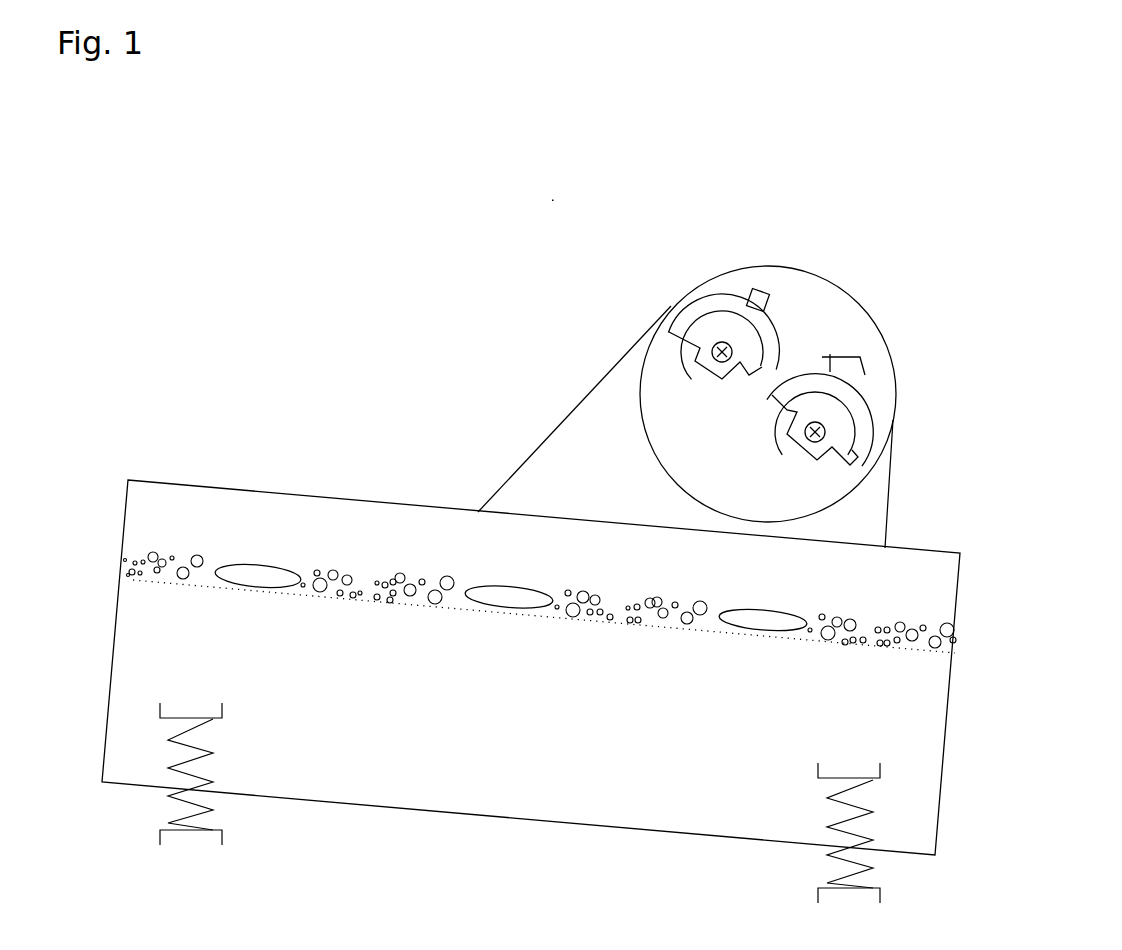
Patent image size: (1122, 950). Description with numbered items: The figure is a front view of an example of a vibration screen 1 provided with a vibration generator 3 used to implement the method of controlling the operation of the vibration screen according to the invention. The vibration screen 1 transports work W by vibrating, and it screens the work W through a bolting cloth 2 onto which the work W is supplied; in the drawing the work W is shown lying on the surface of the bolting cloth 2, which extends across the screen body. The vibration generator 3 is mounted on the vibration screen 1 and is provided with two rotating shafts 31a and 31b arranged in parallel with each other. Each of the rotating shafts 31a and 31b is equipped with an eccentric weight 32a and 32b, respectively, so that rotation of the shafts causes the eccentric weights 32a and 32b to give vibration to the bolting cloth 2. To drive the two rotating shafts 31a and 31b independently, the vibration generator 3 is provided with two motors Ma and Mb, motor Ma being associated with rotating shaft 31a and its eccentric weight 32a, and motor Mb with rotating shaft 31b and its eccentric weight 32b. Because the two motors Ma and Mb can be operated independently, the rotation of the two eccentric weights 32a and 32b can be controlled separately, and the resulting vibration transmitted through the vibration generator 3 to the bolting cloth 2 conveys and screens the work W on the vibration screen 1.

The vibration screen 1 is at (960, 580).
The bolting cloth 2 is at (712, 632).
The vibration generator 3 is at (1073, 298).
The work W is at (257, 567).
The motor Ma is at (722, 352).
The motor Mb is at (815, 432).
The rotating shaft 31a is at (760, 283).
The rotating shaft 31b is at (860, 373).
The eccentric weight 32a is at (780, 302).
The eccentric weight 32b is at (867, 393).